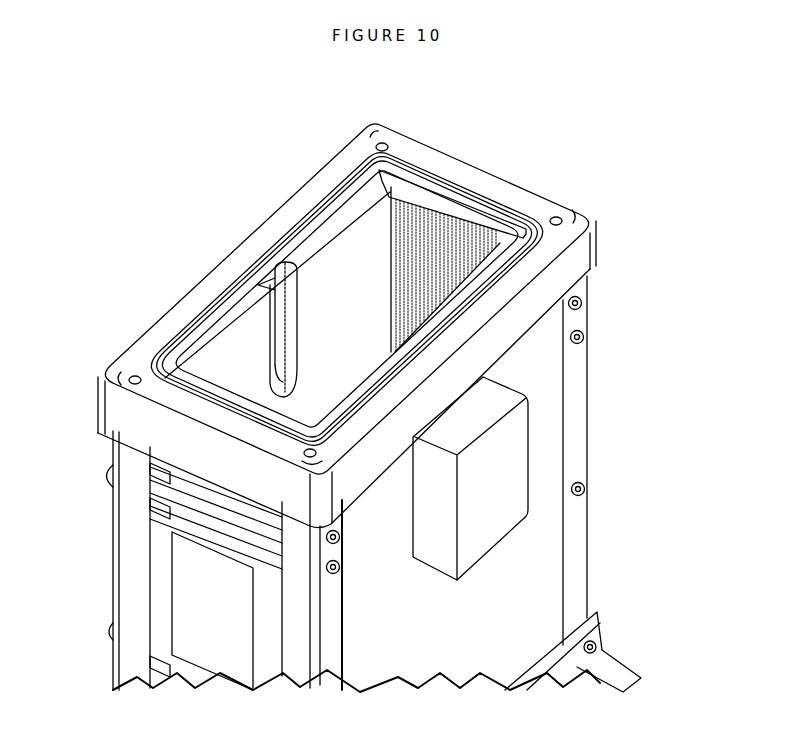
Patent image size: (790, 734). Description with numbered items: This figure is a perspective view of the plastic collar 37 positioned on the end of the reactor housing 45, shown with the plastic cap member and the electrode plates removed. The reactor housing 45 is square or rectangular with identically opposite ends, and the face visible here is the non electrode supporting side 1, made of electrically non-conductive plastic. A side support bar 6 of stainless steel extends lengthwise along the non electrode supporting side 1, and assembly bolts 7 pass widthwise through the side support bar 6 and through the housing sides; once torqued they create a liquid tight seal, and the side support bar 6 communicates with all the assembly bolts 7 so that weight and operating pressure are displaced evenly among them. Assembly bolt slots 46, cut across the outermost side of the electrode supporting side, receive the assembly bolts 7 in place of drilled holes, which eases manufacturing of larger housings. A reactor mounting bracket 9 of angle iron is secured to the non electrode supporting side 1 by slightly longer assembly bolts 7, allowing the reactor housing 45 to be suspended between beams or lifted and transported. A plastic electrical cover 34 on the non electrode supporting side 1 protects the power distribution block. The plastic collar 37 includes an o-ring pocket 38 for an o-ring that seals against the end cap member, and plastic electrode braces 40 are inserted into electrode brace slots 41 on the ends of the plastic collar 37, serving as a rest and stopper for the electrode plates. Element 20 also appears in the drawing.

The non electrode supporting side 1 is at (527, 589).
The side support bar 6 is at (577, 543).
The assembly bolts 7 is at (577, 340).
The reactor mounting bracket 9 is at (577, 667).
The hook rod 20 is at (276, 320).
The plastic electrical cover 34 is at (507, 472).
The plastic collar 37 is at (237, 266).
The o-ring pocket 38 is at (540, 225).
The plastic electrode brace 40 is at (433, 196).
The electrode brace slot 41 is at (163, 380).
The reactor housing 45 is at (655, 246).
The assembly bolt slots 46 is at (160, 480).